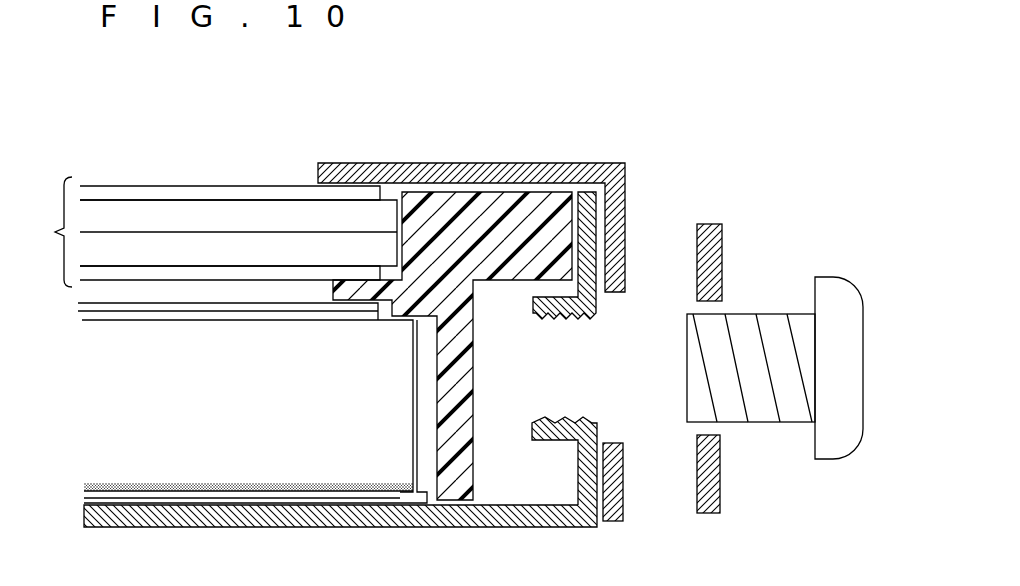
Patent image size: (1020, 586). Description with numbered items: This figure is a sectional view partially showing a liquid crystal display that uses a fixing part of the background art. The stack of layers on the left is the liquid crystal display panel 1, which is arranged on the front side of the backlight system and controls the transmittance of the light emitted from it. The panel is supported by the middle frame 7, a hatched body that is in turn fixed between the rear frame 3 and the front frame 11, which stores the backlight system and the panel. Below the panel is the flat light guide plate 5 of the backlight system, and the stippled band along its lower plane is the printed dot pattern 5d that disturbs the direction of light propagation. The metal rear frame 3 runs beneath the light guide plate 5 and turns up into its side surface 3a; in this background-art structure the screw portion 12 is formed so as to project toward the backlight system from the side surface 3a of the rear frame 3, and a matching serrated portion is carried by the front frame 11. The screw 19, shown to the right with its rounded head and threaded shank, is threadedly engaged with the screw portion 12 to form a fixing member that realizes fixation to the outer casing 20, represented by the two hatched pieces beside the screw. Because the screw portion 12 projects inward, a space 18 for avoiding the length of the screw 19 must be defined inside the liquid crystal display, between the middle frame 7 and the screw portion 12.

The liquid crystal display panel 1 is at (54, 231).
The rear frame 3 is at (88, 512).
The side surface of the rear frame 3a is at (597, 425).
The flat light guide plate 5 is at (107, 398).
The printed dot pattern 5d is at (117, 484).
The middle frame 7 is at (452, 200).
The front frame 11 is at (625, 226).
The screw portion 12 is at (573, 314).
The space 18 is at (505, 420).
The screw 19 is at (827, 277).
The outer casing 20 is at (722, 249).